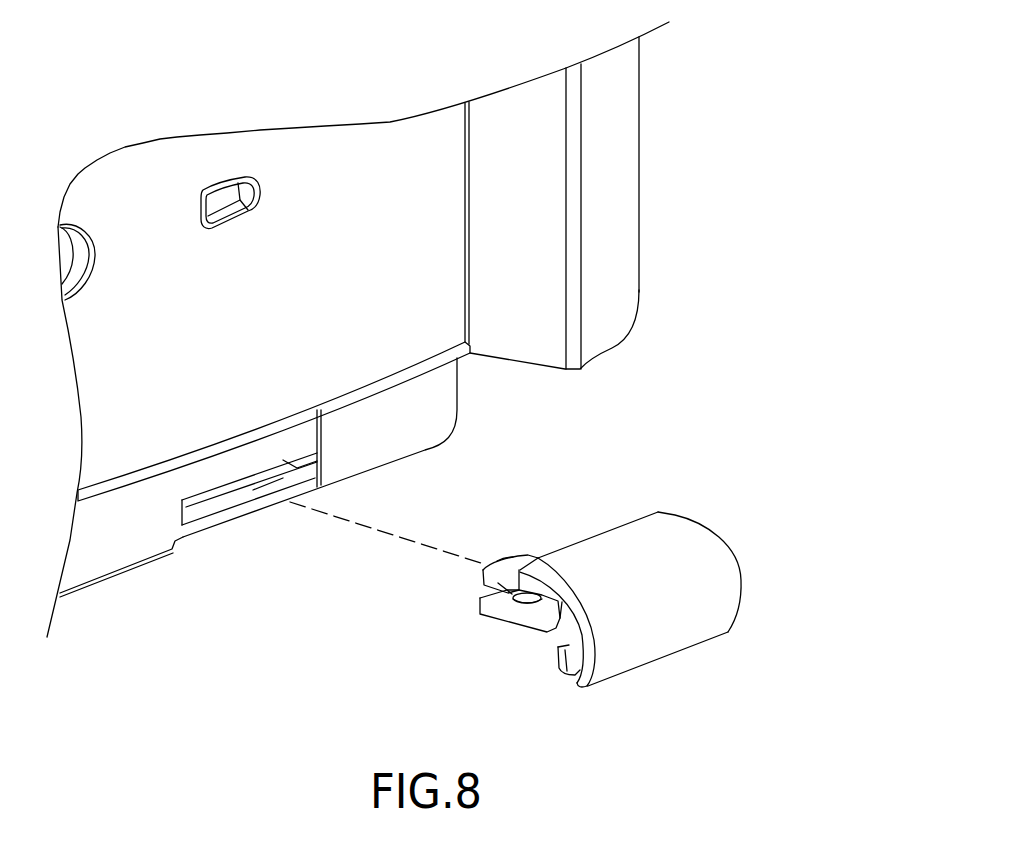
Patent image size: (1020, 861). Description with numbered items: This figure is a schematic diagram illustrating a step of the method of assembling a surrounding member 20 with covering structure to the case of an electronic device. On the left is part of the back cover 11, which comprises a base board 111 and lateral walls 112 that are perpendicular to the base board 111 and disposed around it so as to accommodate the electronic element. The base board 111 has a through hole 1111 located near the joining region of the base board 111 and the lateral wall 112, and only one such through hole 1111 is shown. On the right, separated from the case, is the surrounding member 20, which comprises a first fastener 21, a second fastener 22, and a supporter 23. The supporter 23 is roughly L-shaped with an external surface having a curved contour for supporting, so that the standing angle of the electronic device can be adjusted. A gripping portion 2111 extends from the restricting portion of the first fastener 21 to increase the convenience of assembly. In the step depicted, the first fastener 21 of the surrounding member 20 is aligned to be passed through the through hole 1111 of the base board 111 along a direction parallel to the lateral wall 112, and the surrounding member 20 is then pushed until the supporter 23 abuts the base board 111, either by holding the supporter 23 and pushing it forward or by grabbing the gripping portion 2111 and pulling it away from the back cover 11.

The back cover 11 is at (205, 613).
The base board 111 is at (170, 515).
The through hole 1111 is at (220, 502).
The lateral wall 112 is at (120, 568).
The surrounding member 20 is at (716, 488).
The first fastener 21 is at (507, 603).
The gripping portion 2111 is at (502, 567).
The second fastener 22 is at (557, 657).
The supporter 23 is at (566, 596).